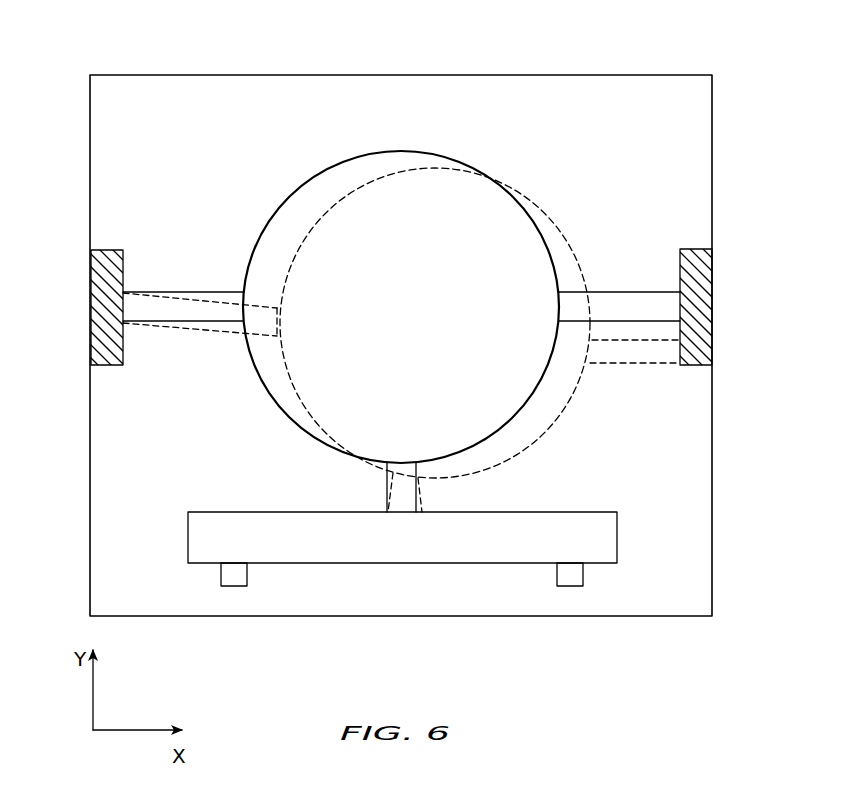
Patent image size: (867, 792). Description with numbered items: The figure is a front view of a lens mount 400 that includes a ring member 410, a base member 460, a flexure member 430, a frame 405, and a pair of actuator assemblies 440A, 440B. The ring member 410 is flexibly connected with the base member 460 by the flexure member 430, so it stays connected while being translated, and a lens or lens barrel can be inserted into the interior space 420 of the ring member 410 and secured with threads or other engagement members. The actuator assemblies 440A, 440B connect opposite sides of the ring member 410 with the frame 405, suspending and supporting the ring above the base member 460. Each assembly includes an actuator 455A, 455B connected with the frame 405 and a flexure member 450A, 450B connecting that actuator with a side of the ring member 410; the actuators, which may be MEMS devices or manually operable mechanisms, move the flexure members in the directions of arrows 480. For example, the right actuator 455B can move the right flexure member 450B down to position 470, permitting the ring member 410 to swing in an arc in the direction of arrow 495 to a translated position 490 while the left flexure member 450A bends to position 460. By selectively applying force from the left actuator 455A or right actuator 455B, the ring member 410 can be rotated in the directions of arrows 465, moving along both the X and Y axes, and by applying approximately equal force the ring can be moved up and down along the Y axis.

The lens mount 400 is at (297, 57).
The frame 405 is at (712, 127).
The ring member 410 is at (285, 202).
The interior space 420 is at (418, 314).
The flexure member 430 is at (385, 485).
The actuator assembly 440A is at (142, 280).
The actuator assembly 440B is at (623, 285).
The left flexure member 450A is at (212, 292).
The right flexure member 450B is at (603, 292).
The left actuator 455A is at (91, 281).
The right actuator 455B is at (712, 278).
The base member 460 is at (617, 549).
The arrows 465 is at (468, 136).
The position 470 is at (671, 373).
The arrows 480 is at (166, 288).
The translated position 490 is at (519, 190).
The arrow 495 is at (553, 425).